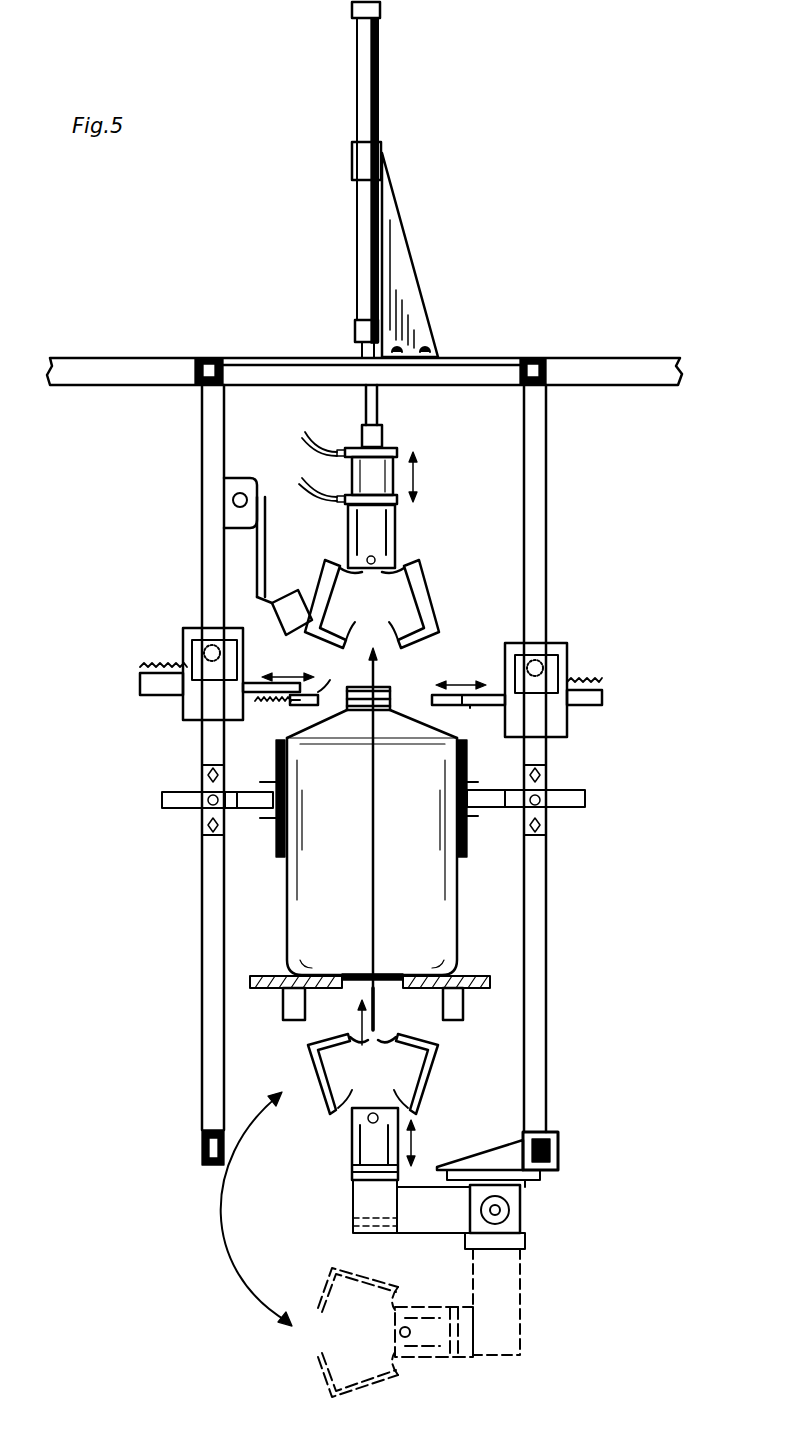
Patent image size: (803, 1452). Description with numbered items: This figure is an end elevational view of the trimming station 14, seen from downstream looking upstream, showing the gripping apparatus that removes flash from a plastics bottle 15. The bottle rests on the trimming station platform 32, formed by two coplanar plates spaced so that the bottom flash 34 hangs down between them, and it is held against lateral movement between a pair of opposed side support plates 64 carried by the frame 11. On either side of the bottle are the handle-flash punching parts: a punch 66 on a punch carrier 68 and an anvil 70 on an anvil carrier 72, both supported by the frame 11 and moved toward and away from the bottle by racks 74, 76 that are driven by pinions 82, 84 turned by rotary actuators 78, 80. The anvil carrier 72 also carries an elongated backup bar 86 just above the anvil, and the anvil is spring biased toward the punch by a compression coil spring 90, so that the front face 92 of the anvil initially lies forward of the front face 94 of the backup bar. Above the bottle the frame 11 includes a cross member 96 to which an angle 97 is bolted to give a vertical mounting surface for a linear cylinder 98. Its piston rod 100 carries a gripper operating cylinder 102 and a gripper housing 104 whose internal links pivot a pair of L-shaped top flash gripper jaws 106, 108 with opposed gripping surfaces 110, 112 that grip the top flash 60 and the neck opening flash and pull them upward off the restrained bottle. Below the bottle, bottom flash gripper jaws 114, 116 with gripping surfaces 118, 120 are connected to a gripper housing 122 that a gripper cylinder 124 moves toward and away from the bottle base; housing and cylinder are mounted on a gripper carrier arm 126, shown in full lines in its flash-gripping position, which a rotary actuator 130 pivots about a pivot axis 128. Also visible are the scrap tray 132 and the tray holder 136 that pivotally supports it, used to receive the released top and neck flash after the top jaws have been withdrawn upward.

The frame 11 is at (202, 866).
The trimming station 14 is at (160, 518).
The plastics bottle 15 is at (432, 898).
The trimming station platform 32 is at (270, 977).
The bottom flash 34 is at (376, 1002).
The top flash 60 is at (376, 672).
The side support plates 64 is at (278, 850).
The punch 66 is at (430, 695).
The punch carrier 68 is at (478, 706).
The anvil 70 is at (305, 705).
The anvil carrier 72 is at (248, 722).
The rack 74 is at (590, 682).
The rack 76 is at (145, 667).
The rotary actuator 78 is at (565, 656).
The rotary actuator 80 is at (190, 641).
The pinion 82 is at (540, 650).
The pinion 84 is at (210, 648).
The backup bar 86 is at (250, 683).
The compression coil spring 90 is at (268, 705).
The front face of anvil 92 is at (318, 700).
The front face of backup bar 94 is at (318, 692).
The cross member 96 is at (468, 375).
The gusset plate 97 is at (412, 265).
The linear cylinder 98 is at (358, 228).
The piston rod 100 is at (378, 404).
The gripper operating cylinder 102 is at (350, 475).
The gripper housing 104 is at (395, 530).
The top flash gripper jaw 106 is at (322, 590).
The top flash gripper jaw 108 is at (430, 586).
The gripping surface 110 is at (348, 620).
The gripping surface 112 is at (394, 620).
The bottom flash gripper jaw 114 is at (308, 1058).
The bottom flash gripper jaw 116 is at (436, 1065).
The gripping surface 118 is at (342, 1083).
The gripping surface 120 is at (405, 1083).
The gripper housing 122 is at (352, 1150).
The gripper cylinder 124 is at (353, 1205).
The gripper carrier arm 126 is at (478, 1280).
The pivot axis 128 is at (520, 1212).
The rotary actuator 130 is at (520, 1198).
The scrap tray 132 is at (272, 622).
The tray holder 136 is at (258, 552).